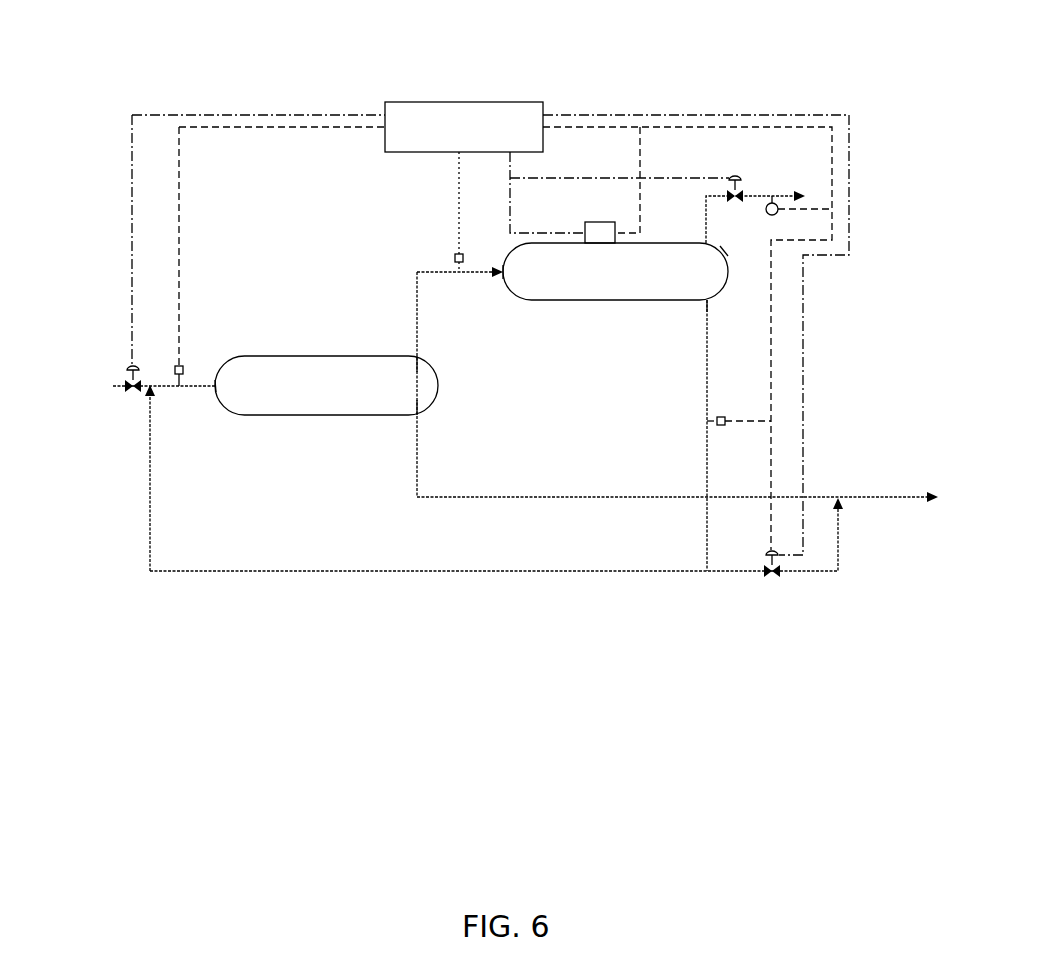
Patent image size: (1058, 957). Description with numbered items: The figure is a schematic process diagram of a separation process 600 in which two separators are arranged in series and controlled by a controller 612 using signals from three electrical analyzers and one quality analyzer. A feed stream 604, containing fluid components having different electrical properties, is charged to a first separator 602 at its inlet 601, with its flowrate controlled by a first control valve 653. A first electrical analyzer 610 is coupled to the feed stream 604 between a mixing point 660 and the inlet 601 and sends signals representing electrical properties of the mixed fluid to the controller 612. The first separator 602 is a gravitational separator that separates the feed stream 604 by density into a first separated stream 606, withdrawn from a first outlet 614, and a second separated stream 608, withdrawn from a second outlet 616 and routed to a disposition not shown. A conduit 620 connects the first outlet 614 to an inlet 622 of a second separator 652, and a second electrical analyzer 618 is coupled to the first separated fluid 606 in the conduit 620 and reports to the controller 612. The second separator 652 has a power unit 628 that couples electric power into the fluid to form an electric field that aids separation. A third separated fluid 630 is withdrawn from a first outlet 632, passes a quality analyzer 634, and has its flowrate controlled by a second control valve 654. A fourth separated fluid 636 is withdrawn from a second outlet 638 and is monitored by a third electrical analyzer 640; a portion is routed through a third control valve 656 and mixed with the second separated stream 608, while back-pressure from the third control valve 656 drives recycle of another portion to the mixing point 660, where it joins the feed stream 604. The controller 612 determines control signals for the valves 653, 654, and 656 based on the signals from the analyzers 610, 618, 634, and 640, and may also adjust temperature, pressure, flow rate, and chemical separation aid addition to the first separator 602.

The separation process 600 is at (181, 55).
The inlet 601 is at (218, 362).
The first separator 602 is at (354, 401).
The feed stream 604 is at (113, 386).
The first separated stream 606 is at (417, 280).
The second separated stream 608 is at (417, 487).
The first electrical analyzer 610 is at (181, 376).
The controller 612 is at (491, 143).
The first outlet 614 is at (415, 355).
The second outlet 616 is at (418, 415).
The second electrical analyzer 618 is at (456, 255).
The conduit 620 is at (418, 328).
The inlet 622 is at (500, 276).
The power unit 628 is at (588, 225).
The third separated fluid 630 is at (706, 196).
The first outlet 632 is at (720, 247).
The quality analyzer 634 is at (773, 197).
The fourth separated fluid 636 is at (707, 457).
The second outlet 638 is at (707, 300).
The third electrical analyzer 640 is at (707, 422).
The second separator 652 is at (641, 287).
The first control valve 653 is at (128, 367).
The second control valve 654 is at (737, 175).
The third control valve 656 is at (768, 575).
The mixing point 660 is at (150, 392).